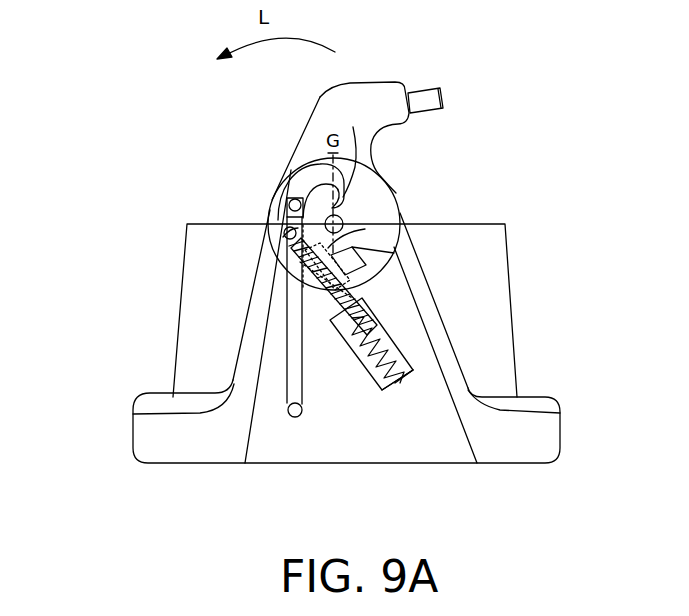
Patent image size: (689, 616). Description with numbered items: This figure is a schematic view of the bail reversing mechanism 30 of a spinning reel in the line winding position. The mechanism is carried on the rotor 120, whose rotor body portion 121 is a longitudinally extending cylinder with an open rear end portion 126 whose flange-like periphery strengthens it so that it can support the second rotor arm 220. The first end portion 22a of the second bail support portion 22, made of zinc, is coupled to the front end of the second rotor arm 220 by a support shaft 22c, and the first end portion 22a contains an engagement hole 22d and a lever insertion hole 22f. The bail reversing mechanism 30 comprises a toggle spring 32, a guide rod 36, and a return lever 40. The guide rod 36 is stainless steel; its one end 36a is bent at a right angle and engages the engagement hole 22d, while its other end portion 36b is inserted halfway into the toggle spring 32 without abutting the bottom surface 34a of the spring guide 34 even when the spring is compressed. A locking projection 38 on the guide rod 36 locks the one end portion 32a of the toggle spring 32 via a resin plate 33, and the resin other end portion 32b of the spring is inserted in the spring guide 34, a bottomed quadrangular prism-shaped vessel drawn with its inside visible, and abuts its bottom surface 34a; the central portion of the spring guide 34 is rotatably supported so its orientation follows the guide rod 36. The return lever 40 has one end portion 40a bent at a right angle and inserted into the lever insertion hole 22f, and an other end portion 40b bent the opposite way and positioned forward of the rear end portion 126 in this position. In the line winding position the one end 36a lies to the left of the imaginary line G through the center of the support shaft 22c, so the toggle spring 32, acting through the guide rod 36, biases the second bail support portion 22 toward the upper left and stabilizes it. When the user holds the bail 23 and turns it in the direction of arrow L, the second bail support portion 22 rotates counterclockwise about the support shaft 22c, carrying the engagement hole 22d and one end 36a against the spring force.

The second bail support portion 22 is at (305, 118).
The first end portion 22a is at (368, 192).
The support shaft 22c is at (361, 150).
The engagement hole 22d is at (283, 237).
The lever insertion hole 22f is at (310, 192).
The bail 23 is at (417, 90).
The bail reversing mechanism 30 is at (443, 197).
The toggle spring 32 is at (395, 253).
The one end portion of the toggle spring 32a is at (360, 223).
The other end portion of the toggle spring 32b is at (390, 380).
The resin plate 33 is at (305, 285).
The spring guide 34 is at (368, 373).
The bottom surface of the spring guide 34a is at (405, 372).
The guide rod 36 is at (333, 302).
The one end of the guide rod 36a is at (285, 231).
The other end portion of the guide rod 36b is at (375, 345).
The locking projection 38 is at (300, 265).
The return lever 40 is at (287, 380).
The one end portion of the return lever 40a is at (292, 198).
The other end portion of the return lever 40b is at (300, 416).
The rotor 120 is at (127, 336).
The rotor body portion 121 is at (517, 300).
The rear end portion 126 is at (377, 463).
The second rotor arm 220 is at (455, 348).